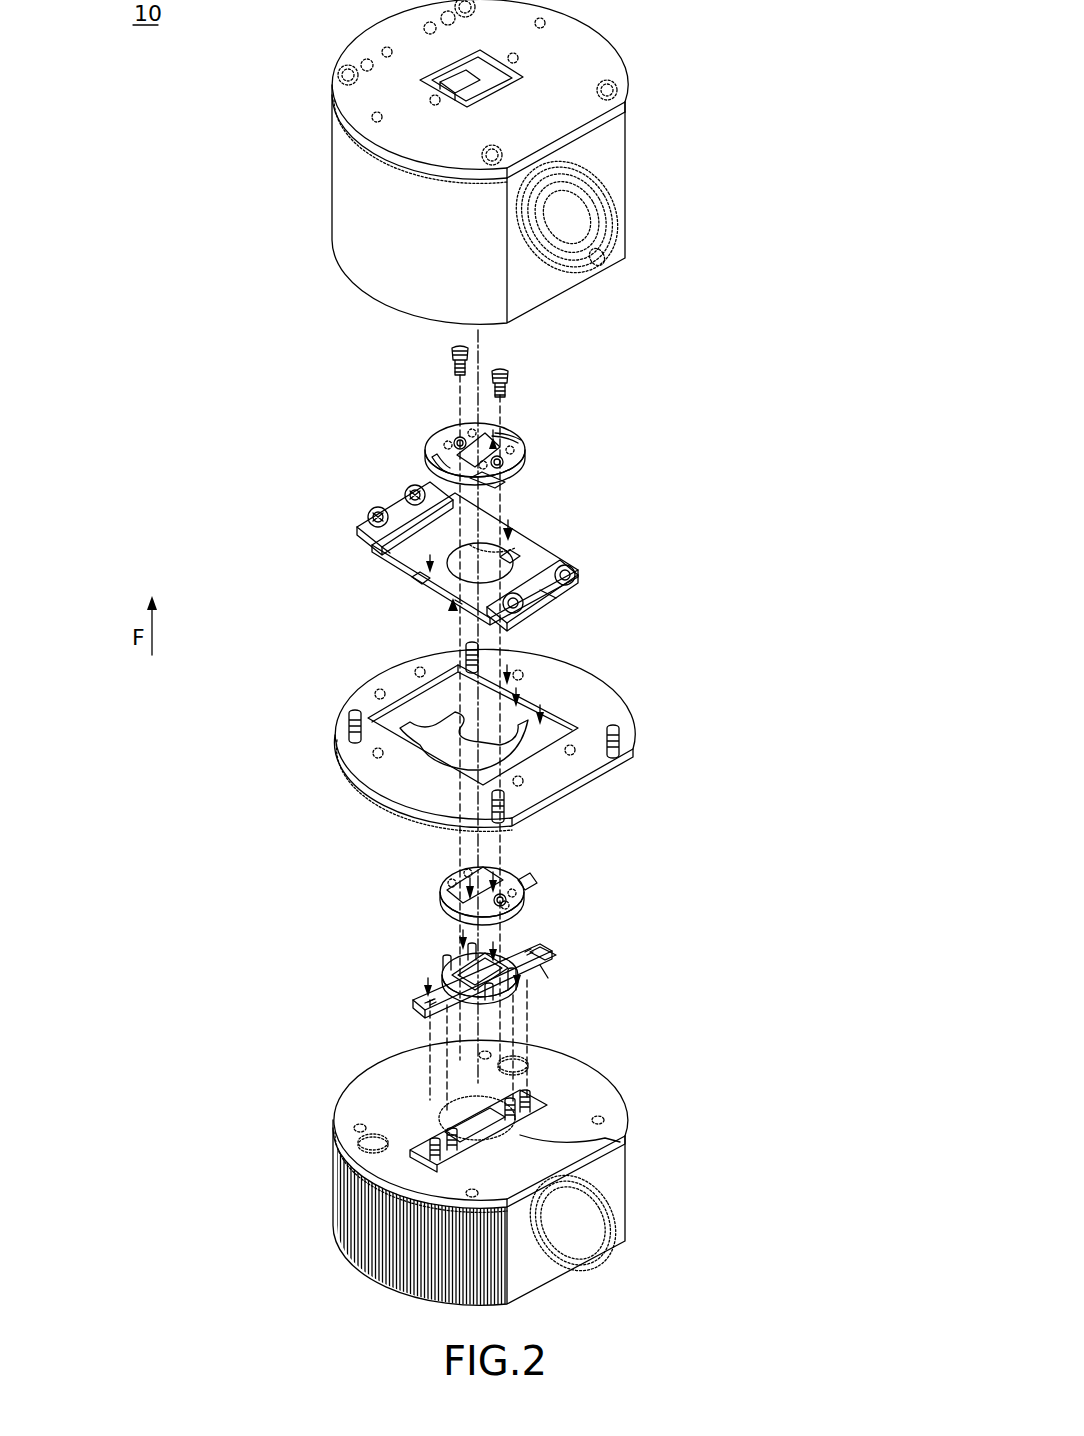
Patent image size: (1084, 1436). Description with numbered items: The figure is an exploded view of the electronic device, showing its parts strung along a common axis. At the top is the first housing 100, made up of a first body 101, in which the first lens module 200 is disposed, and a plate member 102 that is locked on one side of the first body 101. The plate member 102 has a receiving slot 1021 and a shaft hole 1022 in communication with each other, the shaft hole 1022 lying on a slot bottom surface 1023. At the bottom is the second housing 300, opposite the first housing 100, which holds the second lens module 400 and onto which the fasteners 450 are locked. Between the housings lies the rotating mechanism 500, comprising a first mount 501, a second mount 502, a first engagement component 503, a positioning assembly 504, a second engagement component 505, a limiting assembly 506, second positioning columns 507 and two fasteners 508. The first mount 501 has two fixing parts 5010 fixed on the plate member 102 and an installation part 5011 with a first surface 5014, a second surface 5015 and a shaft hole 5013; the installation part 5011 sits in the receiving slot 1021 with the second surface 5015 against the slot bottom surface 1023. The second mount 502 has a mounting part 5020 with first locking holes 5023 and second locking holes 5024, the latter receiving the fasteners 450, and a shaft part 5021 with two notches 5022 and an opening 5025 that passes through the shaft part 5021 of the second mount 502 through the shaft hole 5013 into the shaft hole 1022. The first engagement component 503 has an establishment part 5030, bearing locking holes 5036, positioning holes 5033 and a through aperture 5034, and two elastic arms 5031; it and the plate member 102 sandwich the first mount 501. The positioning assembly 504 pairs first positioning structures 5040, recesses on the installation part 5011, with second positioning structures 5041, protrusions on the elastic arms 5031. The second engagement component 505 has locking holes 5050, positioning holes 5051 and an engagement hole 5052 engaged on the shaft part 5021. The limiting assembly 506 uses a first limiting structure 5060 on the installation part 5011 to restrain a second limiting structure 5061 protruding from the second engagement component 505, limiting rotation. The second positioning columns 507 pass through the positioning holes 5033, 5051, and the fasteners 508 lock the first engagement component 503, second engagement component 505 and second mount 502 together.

The first housing 100 is at (476, 162).
The first body 101 is at (352, 178).
The first lens module 200 is at (568, 215).
The rotating mechanism 500 is at (303, 396).
The first mount 501 is at (258, 433).
The fixing parts 5010 is at (393, 498).
The installation part 5011 is at (350, 523).
The shaft hole 5013 is at (440, 490).
The first surface 5014 is at (430, 548).
The second surface 5015 is at (455, 610).
The second mount 502 is at (312, 922).
The mounting part 5020 is at (413, 1001).
The shaft part 5021 is at (450, 965).
The notches 5022 is at (463, 930).
The first locking holes 5023 is at (521, 983).
The second locking holes 5024 is at (428, 978).
The opening 5025 is at (493, 942).
The first engagement component 503 is at (323, 405).
The establishment part 5030 is at (445, 424).
The elastic arms 5031 is at (420, 447).
The positioning holes 5033 is at (518, 453).
The through aperture 5034 is at (493, 430).
The locking holes 5036 is at (518, 462).
The positioning assembly 504 is at (662, 496).
The first positioning structures 5040 is at (508, 520).
The second positioning structures 5041 is at (480, 482).
The second engagement component 505 is at (445, 890).
The locking holes 5050 is at (497, 868).
The positioning holes 5051 is at (510, 878).
The engagement hole 5052 is at (455, 878).
The limiting assembly 506 is at (812, 592).
The first limiting structure 5060 is at (548, 593).
The second limiting structure 5061 is at (522, 880).
The second positioning columns 507 is at (556, 972).
The fasteners 508 is at (507, 393).
The plate member 102 is at (345, 731).
The receiving slot 1021 is at (507, 665).
The shaft hole 1022 is at (516, 688).
The slot bottom surface 1023 is at (540, 705).
The second housing 300 is at (335, 1200).
The second lens module 400 is at (578, 1210).
The fasteners 450 is at (600, 1143).